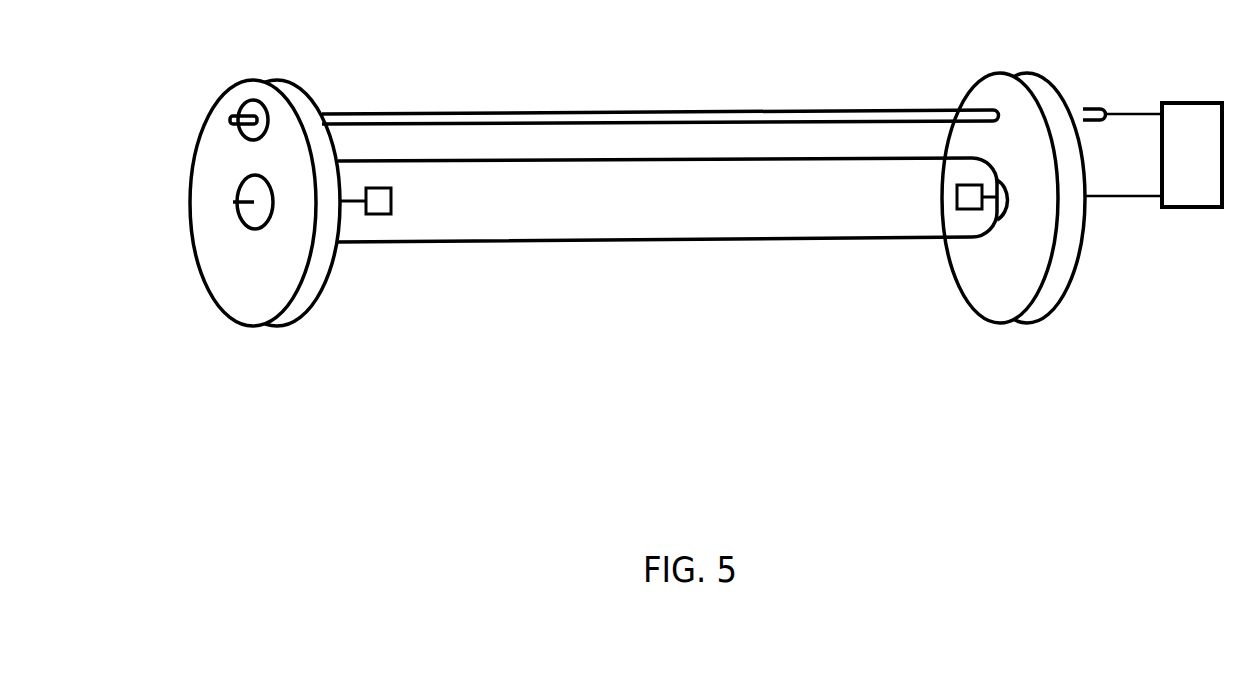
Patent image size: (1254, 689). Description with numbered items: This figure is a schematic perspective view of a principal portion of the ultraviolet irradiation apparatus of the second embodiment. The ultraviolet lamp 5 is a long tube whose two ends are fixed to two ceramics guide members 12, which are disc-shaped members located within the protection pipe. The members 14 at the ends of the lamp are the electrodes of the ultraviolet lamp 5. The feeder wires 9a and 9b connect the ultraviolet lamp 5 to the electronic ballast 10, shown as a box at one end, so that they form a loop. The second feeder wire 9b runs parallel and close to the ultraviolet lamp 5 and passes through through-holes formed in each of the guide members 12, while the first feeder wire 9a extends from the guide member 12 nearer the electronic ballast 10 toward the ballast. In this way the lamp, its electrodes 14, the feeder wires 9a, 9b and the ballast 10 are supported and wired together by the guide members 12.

The ultraviolet lamp 5 is at (697, 241).
The feeder wire 9a is at (1115, 196).
The second feeder wire 9b is at (692, 110).
The electronic ballast 10 is at (1190, 207).
The guide member 12 is at (272, 327).
The electrode 14 is at (380, 215).